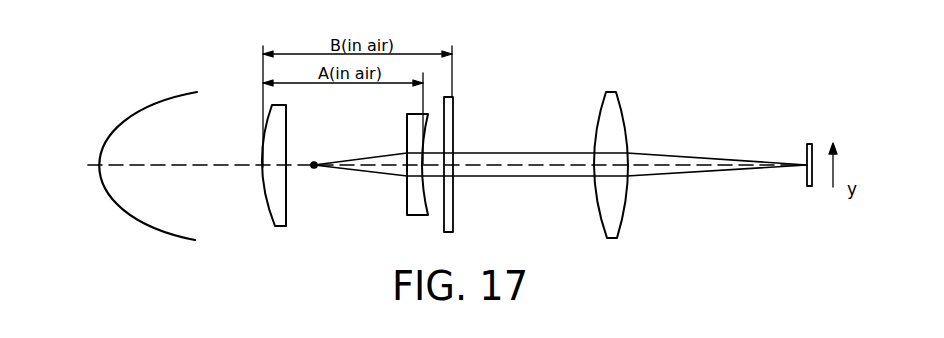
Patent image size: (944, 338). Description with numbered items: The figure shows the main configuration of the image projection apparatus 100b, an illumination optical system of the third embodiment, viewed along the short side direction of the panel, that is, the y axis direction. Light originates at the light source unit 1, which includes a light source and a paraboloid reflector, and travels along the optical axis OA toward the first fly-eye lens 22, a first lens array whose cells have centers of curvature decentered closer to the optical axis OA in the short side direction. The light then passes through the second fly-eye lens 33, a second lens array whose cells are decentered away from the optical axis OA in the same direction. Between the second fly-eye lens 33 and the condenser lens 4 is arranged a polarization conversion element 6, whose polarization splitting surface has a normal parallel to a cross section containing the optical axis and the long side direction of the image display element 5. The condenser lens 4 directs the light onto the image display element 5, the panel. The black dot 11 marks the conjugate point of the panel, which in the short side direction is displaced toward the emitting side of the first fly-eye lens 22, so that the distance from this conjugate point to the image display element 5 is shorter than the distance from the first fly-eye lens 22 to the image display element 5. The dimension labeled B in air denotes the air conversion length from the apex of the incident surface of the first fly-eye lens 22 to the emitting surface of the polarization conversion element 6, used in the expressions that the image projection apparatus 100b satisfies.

The light source unit 1 is at (146, 224).
The first fly-eye lens 22 is at (273, 217).
The black dot 11 is at (315, 168).
The second fly-eye lens 33 is at (405, 203).
The polarization conversion element 6 is at (448, 108).
The condenser lens 4 is at (595, 211).
The image display element 5 is at (804, 173).
The optical axis OA is at (677, 168).
The image projection apparatus 100b is at (797, 79).